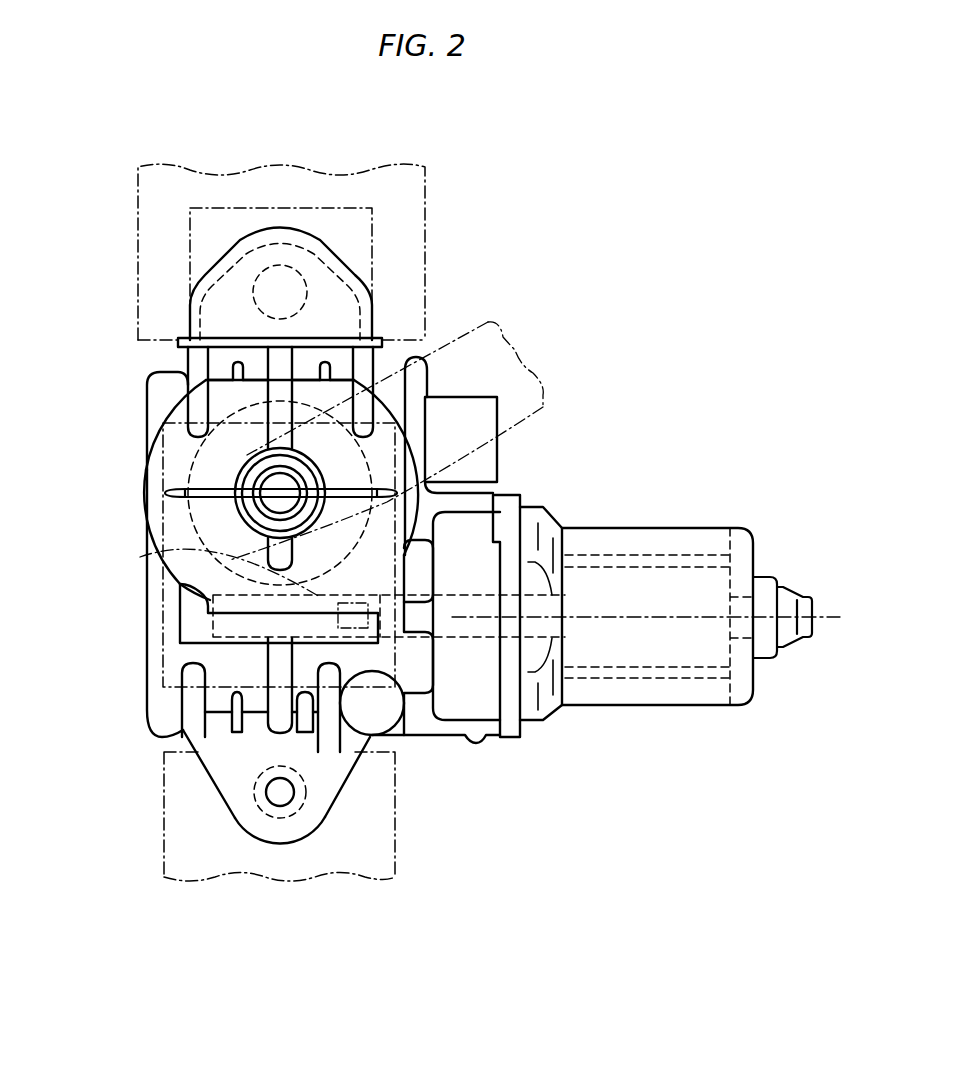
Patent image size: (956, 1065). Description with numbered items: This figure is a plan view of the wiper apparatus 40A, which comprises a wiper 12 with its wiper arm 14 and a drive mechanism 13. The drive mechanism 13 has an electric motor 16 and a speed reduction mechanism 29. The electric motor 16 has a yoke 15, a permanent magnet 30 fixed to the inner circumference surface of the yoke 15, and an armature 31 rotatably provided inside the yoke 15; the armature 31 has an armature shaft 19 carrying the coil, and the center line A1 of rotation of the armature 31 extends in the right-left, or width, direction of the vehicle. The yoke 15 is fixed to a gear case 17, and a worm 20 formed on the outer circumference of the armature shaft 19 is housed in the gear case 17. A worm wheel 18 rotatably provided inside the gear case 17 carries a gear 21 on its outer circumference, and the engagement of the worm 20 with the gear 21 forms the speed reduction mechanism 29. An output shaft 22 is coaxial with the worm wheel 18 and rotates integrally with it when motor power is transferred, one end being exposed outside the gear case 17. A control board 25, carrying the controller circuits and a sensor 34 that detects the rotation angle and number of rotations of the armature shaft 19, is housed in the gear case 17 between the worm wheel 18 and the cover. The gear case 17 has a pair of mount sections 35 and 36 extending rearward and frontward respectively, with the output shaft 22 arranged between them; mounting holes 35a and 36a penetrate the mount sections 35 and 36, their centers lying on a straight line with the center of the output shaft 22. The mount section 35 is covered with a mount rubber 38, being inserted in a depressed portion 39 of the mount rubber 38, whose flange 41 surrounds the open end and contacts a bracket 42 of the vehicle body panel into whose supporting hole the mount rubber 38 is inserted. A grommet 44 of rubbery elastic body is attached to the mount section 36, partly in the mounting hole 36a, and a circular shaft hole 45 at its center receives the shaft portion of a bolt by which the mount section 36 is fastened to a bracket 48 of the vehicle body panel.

The wiper apparatus 40A is at (602, 313).
The wiper 12 is at (545, 376).
The drive mechanism 13 is at (562, 747).
The wiper arm 14 is at (515, 405).
The yoke 15 is at (690, 548).
The electric motor 16 is at (730, 677).
The gear case 17 is at (413, 742).
The worm wheel 18 is at (217, 465).
The armature shaft 19 is at (470, 640).
The worm 20 is at (200, 695).
The gear 21 is at (177, 480).
The output shaft 22 is at (277, 493).
The control board 25 is at (161, 660).
The speed reduction mechanism 29 is at (175, 578).
The permanent magnet 30 is at (670, 693).
The armature 31 is at (730, 558).
The sensor 34 is at (209, 552).
The mount section 35 is at (238, 255).
The mounting hole 35a is at (300, 267).
The mount section 36 is at (343, 770).
The mounting hole 36a is at (293, 817).
The mount rubber 38 is at (350, 287).
The depressed portion 39 is at (373, 313).
The flange 41 is at (178, 343).
The bracket 42 is at (407, 197).
The grommet 44 is at (255, 813).
The shaft hole 45 is at (278, 795).
The bracket 48 is at (385, 863).
The center line A1 is at (825, 620).